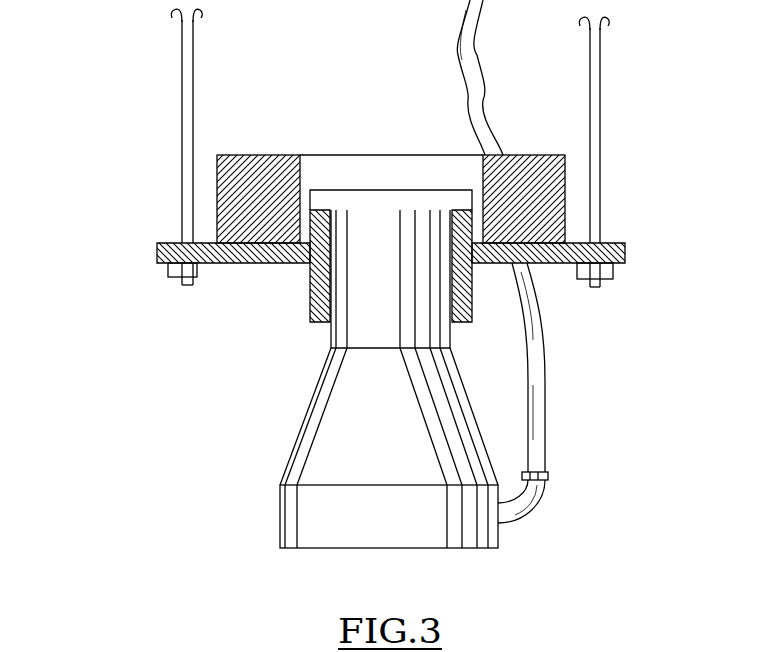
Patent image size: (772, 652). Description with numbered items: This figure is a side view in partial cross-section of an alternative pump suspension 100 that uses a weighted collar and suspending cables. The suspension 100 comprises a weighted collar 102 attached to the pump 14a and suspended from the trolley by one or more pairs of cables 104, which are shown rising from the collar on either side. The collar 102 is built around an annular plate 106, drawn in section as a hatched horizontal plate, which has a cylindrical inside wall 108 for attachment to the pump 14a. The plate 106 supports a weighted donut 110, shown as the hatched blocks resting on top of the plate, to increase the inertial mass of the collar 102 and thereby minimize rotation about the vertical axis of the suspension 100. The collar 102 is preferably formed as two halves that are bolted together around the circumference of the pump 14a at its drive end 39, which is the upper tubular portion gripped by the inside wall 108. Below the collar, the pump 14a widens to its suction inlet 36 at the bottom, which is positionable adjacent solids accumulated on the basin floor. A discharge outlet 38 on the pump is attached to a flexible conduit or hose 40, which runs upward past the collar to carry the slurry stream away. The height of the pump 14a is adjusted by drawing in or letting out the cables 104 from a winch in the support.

The pump suspension 100 is at (143, 318).
The weighted collar 102 is at (610, 193).
The cables 104 is at (190, 100).
The annular plate 106 is at (627, 258).
The cylindrical inside wall 108 is at (310, 288).
The weighted donut 110 is at (247, 192).
The drive end 39 is at (372, 332).
The pump 14a is at (302, 427).
The suction inlet 36 is at (312, 520).
The flexible conduit or hose 40 is at (535, 358).
The discharge outlet 38 is at (540, 498).